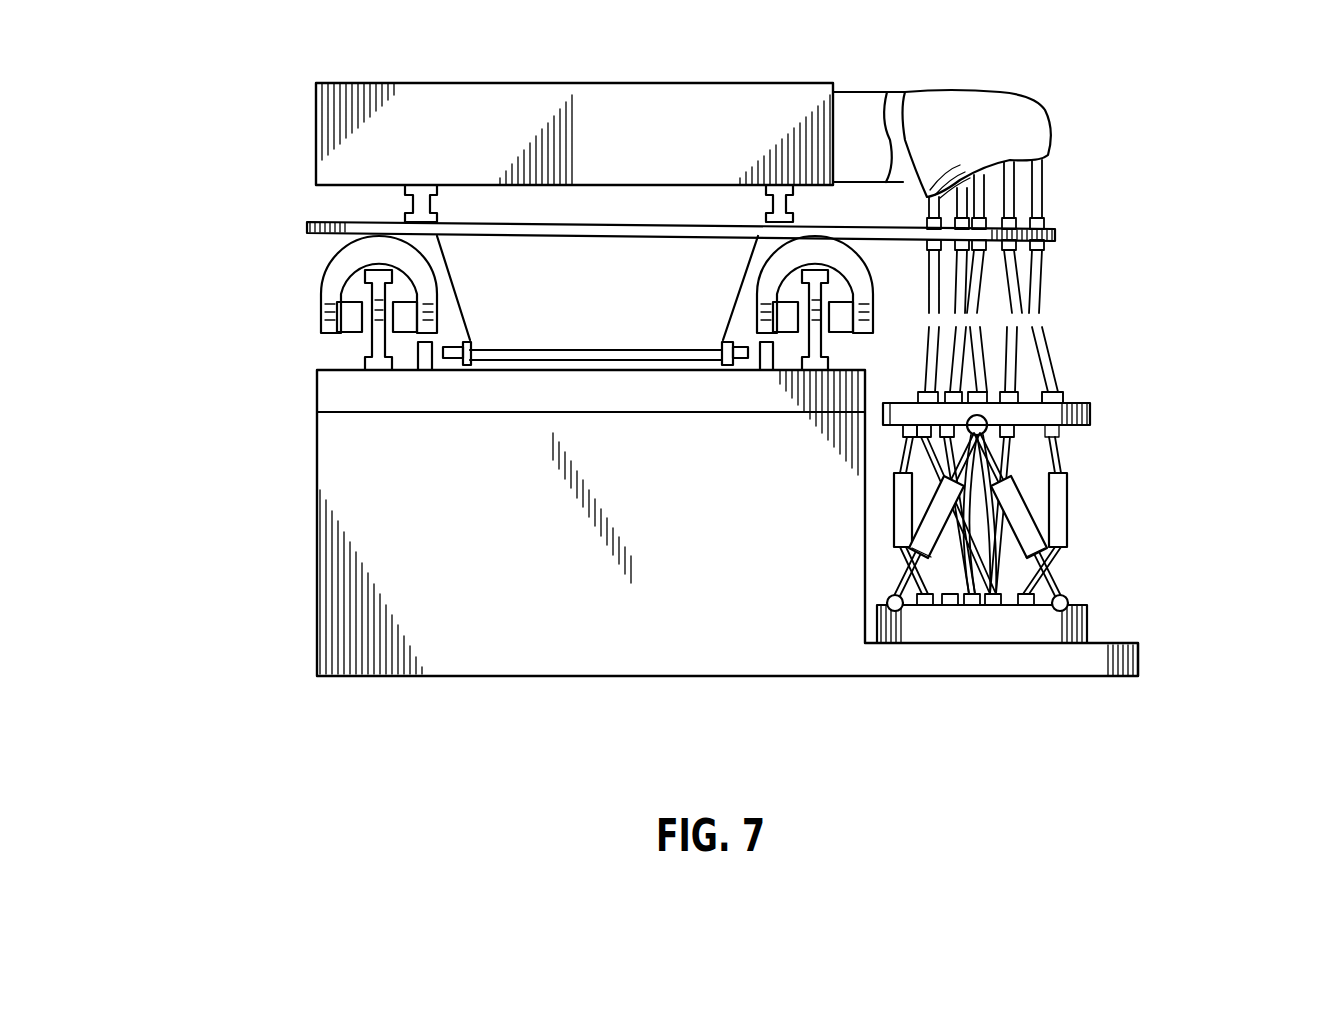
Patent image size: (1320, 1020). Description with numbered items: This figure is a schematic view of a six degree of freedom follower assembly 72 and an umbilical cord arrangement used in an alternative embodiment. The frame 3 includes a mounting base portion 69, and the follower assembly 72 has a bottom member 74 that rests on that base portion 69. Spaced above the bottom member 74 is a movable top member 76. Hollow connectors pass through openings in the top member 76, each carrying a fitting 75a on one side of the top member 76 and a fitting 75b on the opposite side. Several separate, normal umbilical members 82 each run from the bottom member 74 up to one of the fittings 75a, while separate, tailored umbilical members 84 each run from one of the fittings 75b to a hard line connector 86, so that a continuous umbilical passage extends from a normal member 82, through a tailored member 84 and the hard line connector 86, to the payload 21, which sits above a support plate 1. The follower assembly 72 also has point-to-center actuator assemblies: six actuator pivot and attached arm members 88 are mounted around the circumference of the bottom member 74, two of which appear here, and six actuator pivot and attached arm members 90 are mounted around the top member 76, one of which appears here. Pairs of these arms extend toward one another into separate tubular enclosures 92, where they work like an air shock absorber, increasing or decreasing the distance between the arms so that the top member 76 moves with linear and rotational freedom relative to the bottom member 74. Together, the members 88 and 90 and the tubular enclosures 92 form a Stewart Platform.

The support plate 1 is at (315, 237).
The frame 3 is at (487, 680).
The payload 21 is at (328, 120).
The mounting base portion 69 is at (1100, 665).
The follower assembly 72 is at (1160, 515).
The bottom member 74 is at (1080, 625).
The fitting 75a is at (1060, 436).
The fitting 75b is at (1056, 396).
The top member 76 is at (1090, 410).
The normal umbilical member 82 is at (1060, 465).
The tailored umbilical member 84 is at (1047, 340).
The hard line connector 86 is at (1012, 195).
The actuator pivot and attached arm member 88 is at (895, 611).
The actuator pivot and attached arm member 90 is at (967, 425).
The tubular enclosure 92 is at (923, 513).